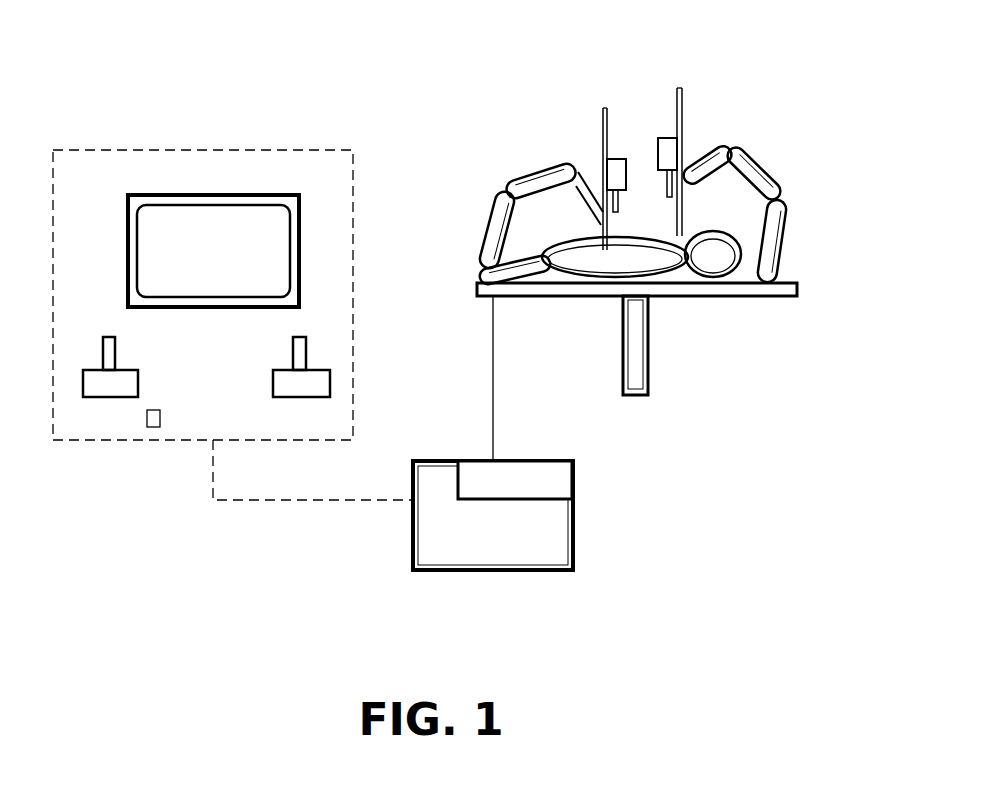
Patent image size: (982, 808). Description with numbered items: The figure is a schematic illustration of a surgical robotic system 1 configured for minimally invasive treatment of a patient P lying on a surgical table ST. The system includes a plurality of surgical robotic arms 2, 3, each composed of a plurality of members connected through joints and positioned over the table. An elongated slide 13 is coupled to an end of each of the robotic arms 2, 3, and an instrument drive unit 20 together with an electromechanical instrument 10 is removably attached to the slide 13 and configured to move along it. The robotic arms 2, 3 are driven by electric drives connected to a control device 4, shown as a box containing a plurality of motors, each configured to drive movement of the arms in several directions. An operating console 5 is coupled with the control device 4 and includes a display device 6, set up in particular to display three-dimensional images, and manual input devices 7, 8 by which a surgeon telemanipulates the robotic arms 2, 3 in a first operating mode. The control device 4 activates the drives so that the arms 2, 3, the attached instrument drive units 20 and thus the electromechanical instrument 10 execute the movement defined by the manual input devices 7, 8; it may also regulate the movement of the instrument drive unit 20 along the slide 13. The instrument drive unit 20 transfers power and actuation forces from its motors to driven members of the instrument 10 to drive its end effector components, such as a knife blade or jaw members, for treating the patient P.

The surgical robotic system 1 is at (703, 492).
The surgical robotic arm 2 is at (513, 185).
The surgical robotic arm 3 is at (780, 157).
The control device 4 is at (482, 533).
The operating console 5 is at (142, 113).
The display device 6 is at (208, 254).
The manual input device 7 is at (95, 387).
The manual input device 8 is at (302, 385).
The electromechanical instrument 10 is at (622, 210).
The slide 13 is at (603, 125).
The instrument drive unit 20 is at (618, 152).
The surgical table ST is at (570, 290).
The patient P is at (620, 262).